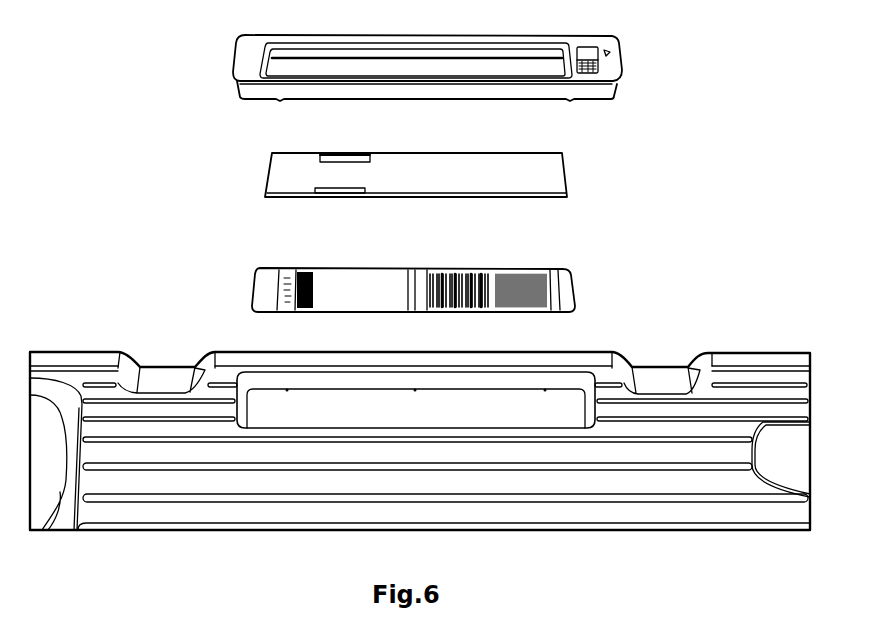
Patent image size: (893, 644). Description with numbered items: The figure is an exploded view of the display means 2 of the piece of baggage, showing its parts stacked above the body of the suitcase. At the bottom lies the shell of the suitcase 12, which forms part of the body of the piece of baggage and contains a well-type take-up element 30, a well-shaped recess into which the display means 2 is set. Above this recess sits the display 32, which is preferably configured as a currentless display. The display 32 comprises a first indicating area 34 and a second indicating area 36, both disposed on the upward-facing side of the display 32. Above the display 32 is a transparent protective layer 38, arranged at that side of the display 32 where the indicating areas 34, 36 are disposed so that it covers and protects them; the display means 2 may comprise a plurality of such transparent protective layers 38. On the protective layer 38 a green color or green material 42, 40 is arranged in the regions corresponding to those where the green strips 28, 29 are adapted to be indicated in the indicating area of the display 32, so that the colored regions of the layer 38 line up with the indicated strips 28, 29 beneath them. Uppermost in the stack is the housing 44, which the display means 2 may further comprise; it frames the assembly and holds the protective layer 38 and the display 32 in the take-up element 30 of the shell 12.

The display means 2 is at (420, 277).
The second shell of the suitcase 12 is at (420, 401).
The well-type take-up element 30 is at (553, 397).
The display 32 is at (457, 260).
The first indicating area 34 is at (463, 268).
The second indicating area 36 is at (353, 268).
The transparent protective layer 38 is at (442, 173).
The green material 40 is at (294, 214).
The green strip 29 is at (320, 193).
The green material 42 is at (369, 134).
The green strip 28 is at (352, 152).
The housing 44 is at (611, 63).